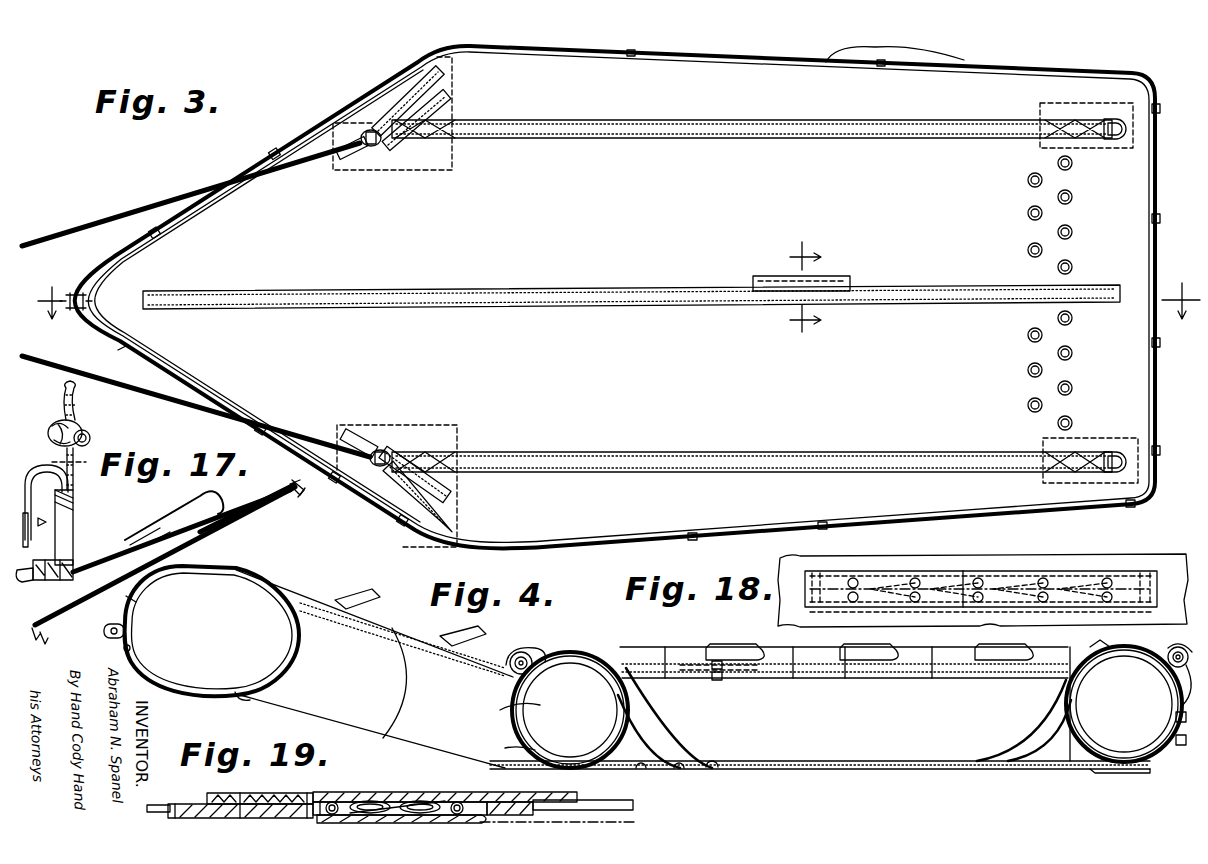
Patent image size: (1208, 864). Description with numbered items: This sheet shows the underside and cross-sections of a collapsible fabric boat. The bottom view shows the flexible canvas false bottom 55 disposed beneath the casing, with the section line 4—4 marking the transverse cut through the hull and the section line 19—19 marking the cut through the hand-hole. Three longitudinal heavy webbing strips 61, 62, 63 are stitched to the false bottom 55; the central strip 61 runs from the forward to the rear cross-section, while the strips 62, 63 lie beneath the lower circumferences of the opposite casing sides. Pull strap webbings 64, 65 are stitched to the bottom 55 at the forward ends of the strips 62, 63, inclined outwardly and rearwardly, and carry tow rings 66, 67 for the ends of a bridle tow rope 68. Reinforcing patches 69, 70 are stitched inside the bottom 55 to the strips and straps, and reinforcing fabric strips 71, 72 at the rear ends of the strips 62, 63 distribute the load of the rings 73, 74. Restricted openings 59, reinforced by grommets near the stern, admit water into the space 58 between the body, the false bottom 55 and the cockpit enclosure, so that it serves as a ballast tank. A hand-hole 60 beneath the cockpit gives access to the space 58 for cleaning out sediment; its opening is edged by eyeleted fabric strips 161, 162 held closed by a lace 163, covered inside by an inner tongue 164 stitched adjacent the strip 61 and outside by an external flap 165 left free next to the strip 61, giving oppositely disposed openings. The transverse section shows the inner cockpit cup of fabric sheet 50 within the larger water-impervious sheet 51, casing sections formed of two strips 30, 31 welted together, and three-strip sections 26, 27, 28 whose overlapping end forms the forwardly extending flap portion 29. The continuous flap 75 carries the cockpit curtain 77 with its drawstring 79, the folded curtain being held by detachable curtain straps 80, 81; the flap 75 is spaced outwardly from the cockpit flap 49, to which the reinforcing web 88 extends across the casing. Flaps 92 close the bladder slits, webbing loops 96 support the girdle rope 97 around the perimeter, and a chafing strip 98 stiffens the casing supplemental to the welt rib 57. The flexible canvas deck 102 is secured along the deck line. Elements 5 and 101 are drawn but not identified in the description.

In FIG. 3, the false bottom 55 is at (1012, 85).
In FIG. 4, the false bottom 55 is at (641, 770).
In FIG. 18, the false bottom 55 is at (1045, 568).
In FIG. 19, the false bottom 55 is at (150, 790).
In FIG. 3, the webbing loops 96 is at (895, 47).
In FIG. 3, the strip 62 is at (680, 111).
In FIG. 3, the strip 61 is at (652, 289).
In FIG. 4, the strip 61 is at (760, 770).
In FIG. 18, the strip 61 is at (805, 606).
In FIG. 19, the strip 61 is at (176, 812).
In FIG. 3, the strip 63 is at (665, 453).
In FIG. 3, the pull strap webbing 64 is at (440, 85).
In FIG. 3, the pull strap webbing 65 is at (456, 493).
In FIG. 3, the tow ring 66 is at (372, 147).
In FIG. 3, the tow ring 67 is at (380, 450).
In FIG. 3, the bridle tow rope 68 is at (62, 243).
In FIG. 3, the reinforcing patch 69 is at (428, 166).
In FIG. 3, the reinforcing patch 70 is at (420, 440).
In FIG. 3, the reinforcing strip 71 is at (1040, 148).
In FIG. 3, the reinforcing strip 72 is at (1043, 441).
In FIG. 3, the ring 73 is at (1118, 140).
In FIG. 3, the ring 74 is at (1122, 452).
In FIG. 4, the ring 74 is at (1132, 775).
In FIG. 3, the girdle rope 97 is at (112, 256).
In FIG. 4, the girdle rope 97 is at (112, 628).
In FIG. 3, the hand-hole opening 60 is at (850, 277).
In FIG. 3, the restricted openings 59 is at (1058, 268).
In FIG. 3, the welt rib 57 is at (136, 350).
In FIG. 4, the welt rib 57 is at (125, 650).
In FIG. 3, the section line 4— 4 is at (619, 288).
In FIG. 3, the section line 19— 19 is at (790, 288).
In FIG. 17, the cockpit curtain 77 is at (64, 388).
In FIG. 4, the cockpit curtain 77 is at (528, 650).
In FIG. 17, the drawstring 79 is at (92, 437).
In FIG. 17, the continuous flap 75 is at (48, 471).
In FIG. 17, the curtain strap 81 is at (41, 517).
In FIG. 17, the flexible deck 102 is at (20, 568).
In FIG. 17, the strip 27 is at (48, 615).
In FIG. 4, the strip 27 is at (512, 712).
In FIG. 17, the flap portion 29 is at (90, 562).
In FIG. 17, the strip 26 is at (288, 492).
In FIG. 4, the strip 26 is at (620, 660).
In FIG. 17, the curtain strap 80 is at (175, 508).
In FIG. 4, the strip 30 is at (168, 568).
In FIG. 4, the roll 5 is at (288, 683).
In FIG. 4, the strip 31 is at (246, 700).
In FIG. 4, the flaps 92 is at (270, 578).
In FIG. 4, the chafing strip 98 is at (128, 596).
In FIG. 4, the strip 28 is at (520, 746).
In FIG. 4, the cockpit flap 49 is at (782, 678).
In FIG. 4, the stitching 101 is at (694, 670).
In FIG. 4, the reinforcing web 88 is at (716, 680).
In FIG. 4, the sheet 51 is at (679, 770).
In FIG. 4, the fabric sheet 50 is at (712, 768).
In FIG. 4, the space 58 is at (1042, 752).
In FIG. 18, the fabric strip 161 is at (935, 588).
In FIG. 19, the fabric strip 161 is at (336, 786).
In FIG. 18, the fabric strip 162 is at (870, 586).
In FIG. 19, the fabric strip 162 is at (455, 801).
In FIG. 18, the lace 163 is at (920, 580).
In FIG. 19, the lace 163 is at (378, 786).
In FIG. 18, the inner tongue 164 is at (995, 580).
In FIG. 19, the inner tongue 164 is at (218, 793).
In FIG. 19, the external flap 165 is at (320, 819).